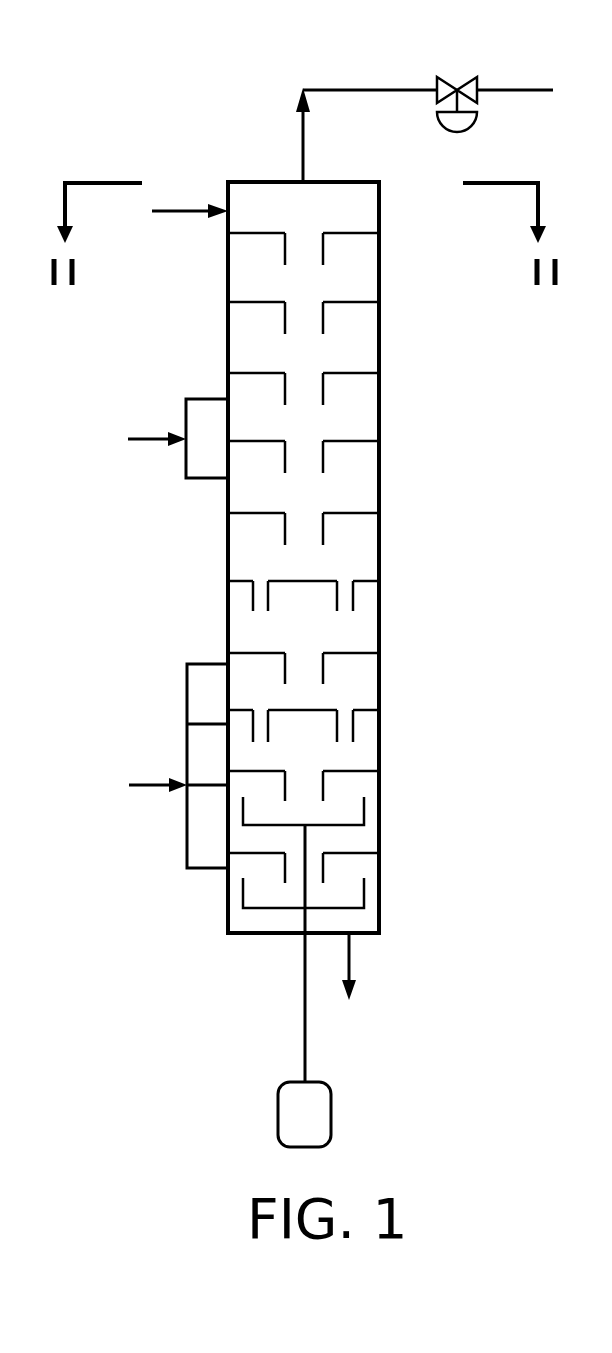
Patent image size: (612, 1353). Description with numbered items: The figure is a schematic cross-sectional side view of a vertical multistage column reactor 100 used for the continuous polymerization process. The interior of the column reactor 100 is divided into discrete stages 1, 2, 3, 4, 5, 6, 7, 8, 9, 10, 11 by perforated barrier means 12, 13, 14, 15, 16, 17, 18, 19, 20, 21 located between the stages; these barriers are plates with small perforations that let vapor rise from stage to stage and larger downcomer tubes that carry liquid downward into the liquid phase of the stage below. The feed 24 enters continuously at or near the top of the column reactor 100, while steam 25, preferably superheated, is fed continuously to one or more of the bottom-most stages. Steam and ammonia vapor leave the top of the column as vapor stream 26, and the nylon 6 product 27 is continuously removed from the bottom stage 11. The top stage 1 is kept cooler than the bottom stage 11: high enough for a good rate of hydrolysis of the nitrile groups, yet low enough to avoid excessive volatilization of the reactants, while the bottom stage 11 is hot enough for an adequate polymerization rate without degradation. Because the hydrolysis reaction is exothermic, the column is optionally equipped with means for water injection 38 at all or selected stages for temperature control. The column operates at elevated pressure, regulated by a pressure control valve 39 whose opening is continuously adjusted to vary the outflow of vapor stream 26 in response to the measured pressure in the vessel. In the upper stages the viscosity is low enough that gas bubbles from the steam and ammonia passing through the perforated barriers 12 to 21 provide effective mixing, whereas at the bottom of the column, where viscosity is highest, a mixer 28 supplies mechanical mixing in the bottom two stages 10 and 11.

The multistage column reactor 100 is at (259, 58).
The top stage 1 is at (369, 217).
The stage 2 is at (369, 283).
The stage 3 is at (369, 355).
The stage 4 is at (369, 423).
The stage 5 is at (369, 498).
The stage 6 is at (369, 562).
The stage 7 is at (369, 638).
The stage 8 is at (369, 701).
The stage 9 is at (369, 761).
The stage 10 is at (384, 815).
The bottom stage 11 is at (384, 897).
The perforated barrier means 12 is at (374, 250).
The perforated barrier means 13 is at (374, 318).
The perforated barrier means 14 is at (374, 390).
The perforated barrier means 15 is at (374, 458).
The perforated barrier means 16 is at (374, 529).
The perforated barrier means 17 is at (358, 597).
The perforated barrier means 18 is at (374, 670).
The perforated barrier means 19 is at (364, 727).
The perforated barrier means 20 is at (380, 787).
The perforated barrier means 21 is at (352, 869).
The feed 24 is at (195, 214).
The steam 25 is at (153, 783).
The vapor stream 26 is at (300, 128).
The nylon 6 product 27 is at (352, 956).
The mixer 28 is at (283, 1081).
The means for water injection 38 is at (147, 437).
The pressure control valve 39 is at (478, 126).